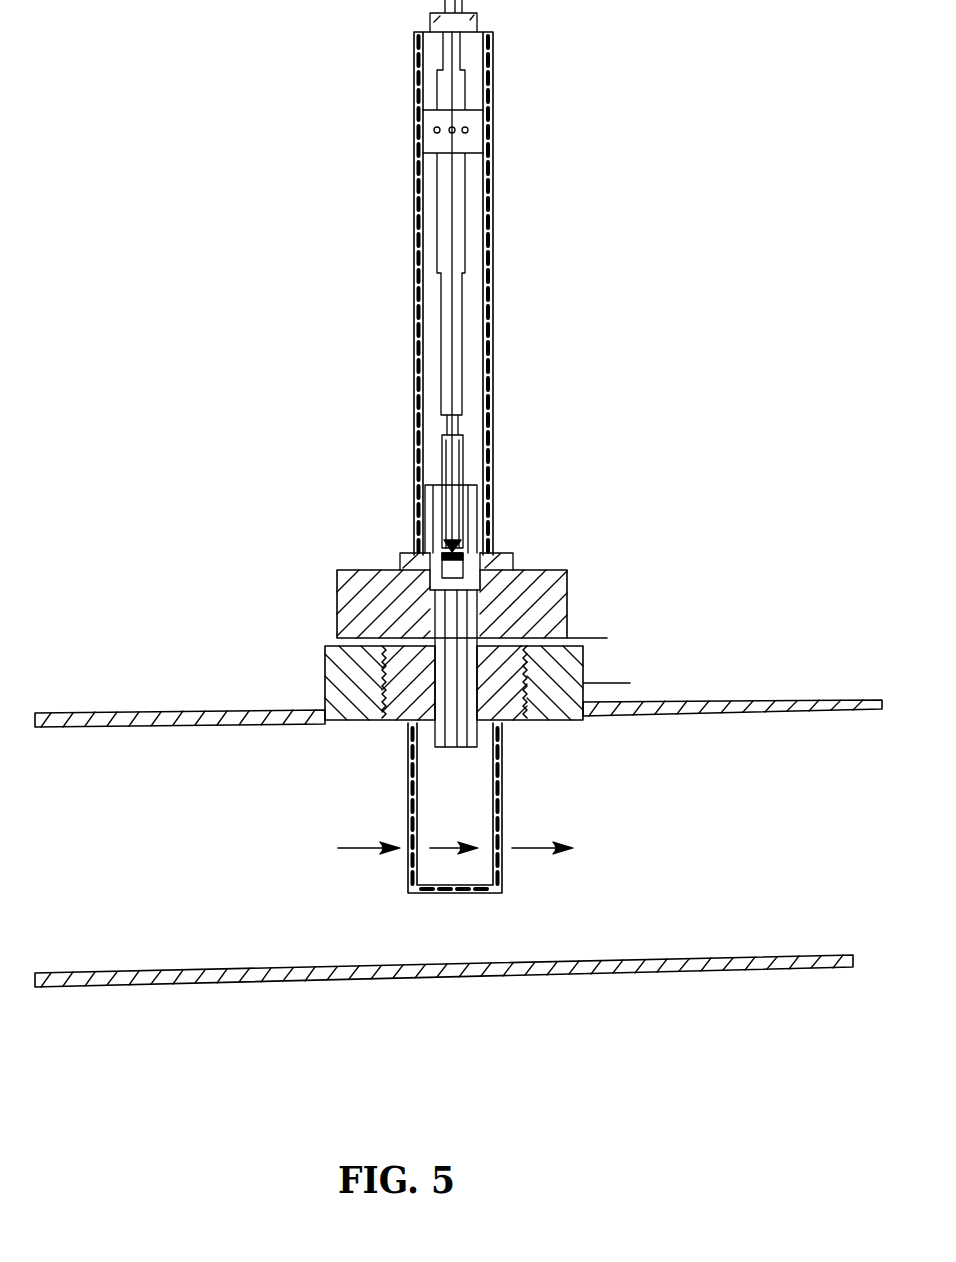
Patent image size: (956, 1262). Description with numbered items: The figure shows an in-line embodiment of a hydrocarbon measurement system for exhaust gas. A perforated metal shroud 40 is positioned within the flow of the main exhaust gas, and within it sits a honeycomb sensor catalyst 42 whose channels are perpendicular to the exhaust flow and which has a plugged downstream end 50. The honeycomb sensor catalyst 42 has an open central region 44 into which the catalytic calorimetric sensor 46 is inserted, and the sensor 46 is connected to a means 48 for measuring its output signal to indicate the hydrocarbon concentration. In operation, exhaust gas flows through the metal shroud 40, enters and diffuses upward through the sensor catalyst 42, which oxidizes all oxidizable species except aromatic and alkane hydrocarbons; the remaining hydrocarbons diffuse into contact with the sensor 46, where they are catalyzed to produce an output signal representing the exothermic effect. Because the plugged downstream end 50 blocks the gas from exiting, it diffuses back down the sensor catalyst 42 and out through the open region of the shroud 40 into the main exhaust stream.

The perforated metal shroud 40 is at (407, 887).
The honeycomb sensor catalyst 42 is at (497, 650).
The open central region 44 is at (410, 552).
The catalytic calorimetric sensor 46 is at (460, 545).
The means for measuring the output signal 48 is at (467, 218).
The plugged downstream end 50 is at (475, 478).